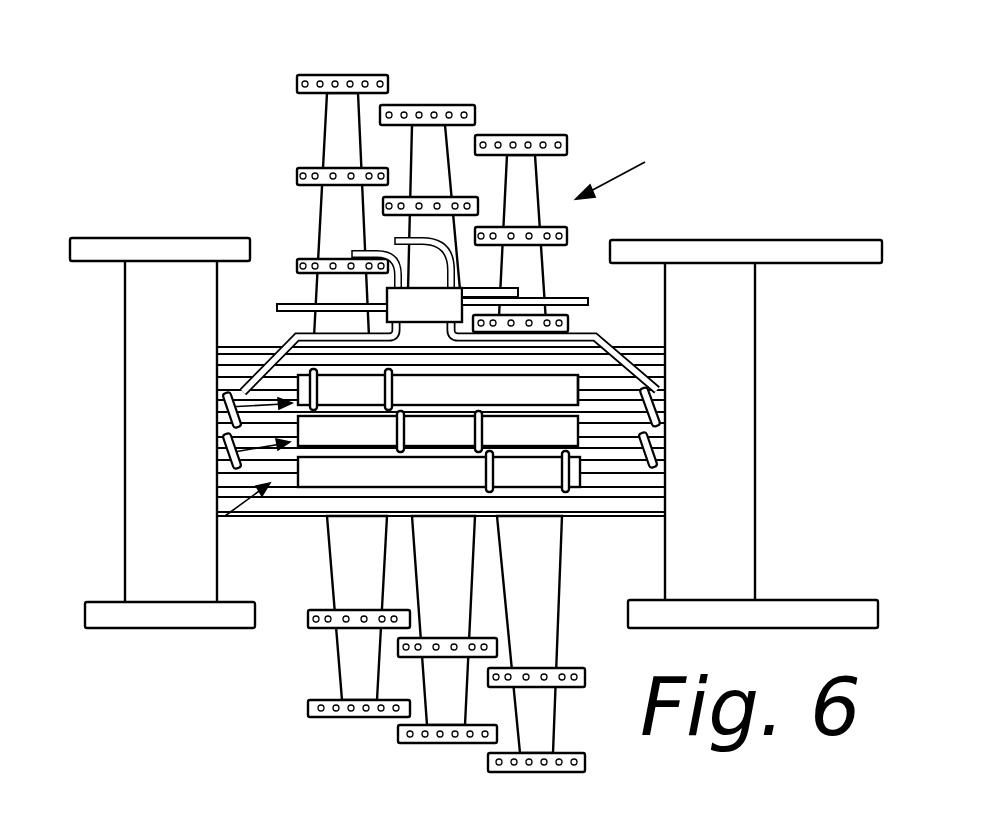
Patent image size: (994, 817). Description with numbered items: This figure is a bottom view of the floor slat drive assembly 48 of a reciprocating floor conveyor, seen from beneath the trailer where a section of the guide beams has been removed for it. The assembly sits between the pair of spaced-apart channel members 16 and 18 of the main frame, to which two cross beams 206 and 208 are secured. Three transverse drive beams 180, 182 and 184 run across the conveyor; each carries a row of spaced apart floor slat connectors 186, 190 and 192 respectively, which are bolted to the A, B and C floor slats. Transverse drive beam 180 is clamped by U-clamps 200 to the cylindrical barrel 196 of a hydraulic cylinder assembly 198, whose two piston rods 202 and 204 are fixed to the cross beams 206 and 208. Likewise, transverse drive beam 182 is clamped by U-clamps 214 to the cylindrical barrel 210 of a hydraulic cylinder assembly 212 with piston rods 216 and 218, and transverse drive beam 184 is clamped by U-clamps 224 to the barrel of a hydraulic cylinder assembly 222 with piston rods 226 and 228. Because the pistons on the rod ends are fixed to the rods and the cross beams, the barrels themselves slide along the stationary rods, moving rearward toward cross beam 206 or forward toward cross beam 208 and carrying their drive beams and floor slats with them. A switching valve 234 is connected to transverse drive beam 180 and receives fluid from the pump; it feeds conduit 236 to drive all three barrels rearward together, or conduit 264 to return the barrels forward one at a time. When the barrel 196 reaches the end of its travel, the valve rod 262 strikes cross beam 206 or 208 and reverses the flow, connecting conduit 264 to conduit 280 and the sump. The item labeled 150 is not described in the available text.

The channel member 16 is at (851, 601).
The channel member 18 is at (838, 244).
The floor slat drive assembly 48 is at (617, 167).
The cylinder end 150 is at (562, 385).
The transverse drive beam 180 is at (525, 144).
The transverse drive beam 182 is at (437, 140).
The transverse drive beam 184 is at (337, 106).
The floor slat connectors 186 is at (557, 757).
The floor slat connectors 190 is at (415, 743).
The floor slat connectors 192 is at (322, 628).
The cylindrical barrel 196 is at (320, 478).
The hydraulic cylinder assembly 198 is at (225, 516).
The U-clamps 200 is at (490, 472).
The piston rod 202 is at (640, 472).
The piston rod 204 is at (220, 483).
The cross beam 206 is at (742, 332).
The cross beam 208 is at (145, 279).
The cylindrical barrel 210 is at (370, 440).
The hydraulic cylinder assembly 212 is at (228, 453).
The U-clamps 214 is at (478, 440).
The piston rod 216 is at (657, 449).
The piston rod 218 is at (220, 431).
The hydraulic cylinder assembly 222 is at (228, 407).
The U-clamps 224 is at (317, 387).
The piston rod 226 is at (657, 390).
The piston rod 228 is at (240, 388).
The switching valve 234 is at (405, 298).
The conduit 236 is at (276, 352).
The valve rod 262 is at (292, 304).
The conduit 264 is at (627, 353).
The conduit 280 is at (403, 233).